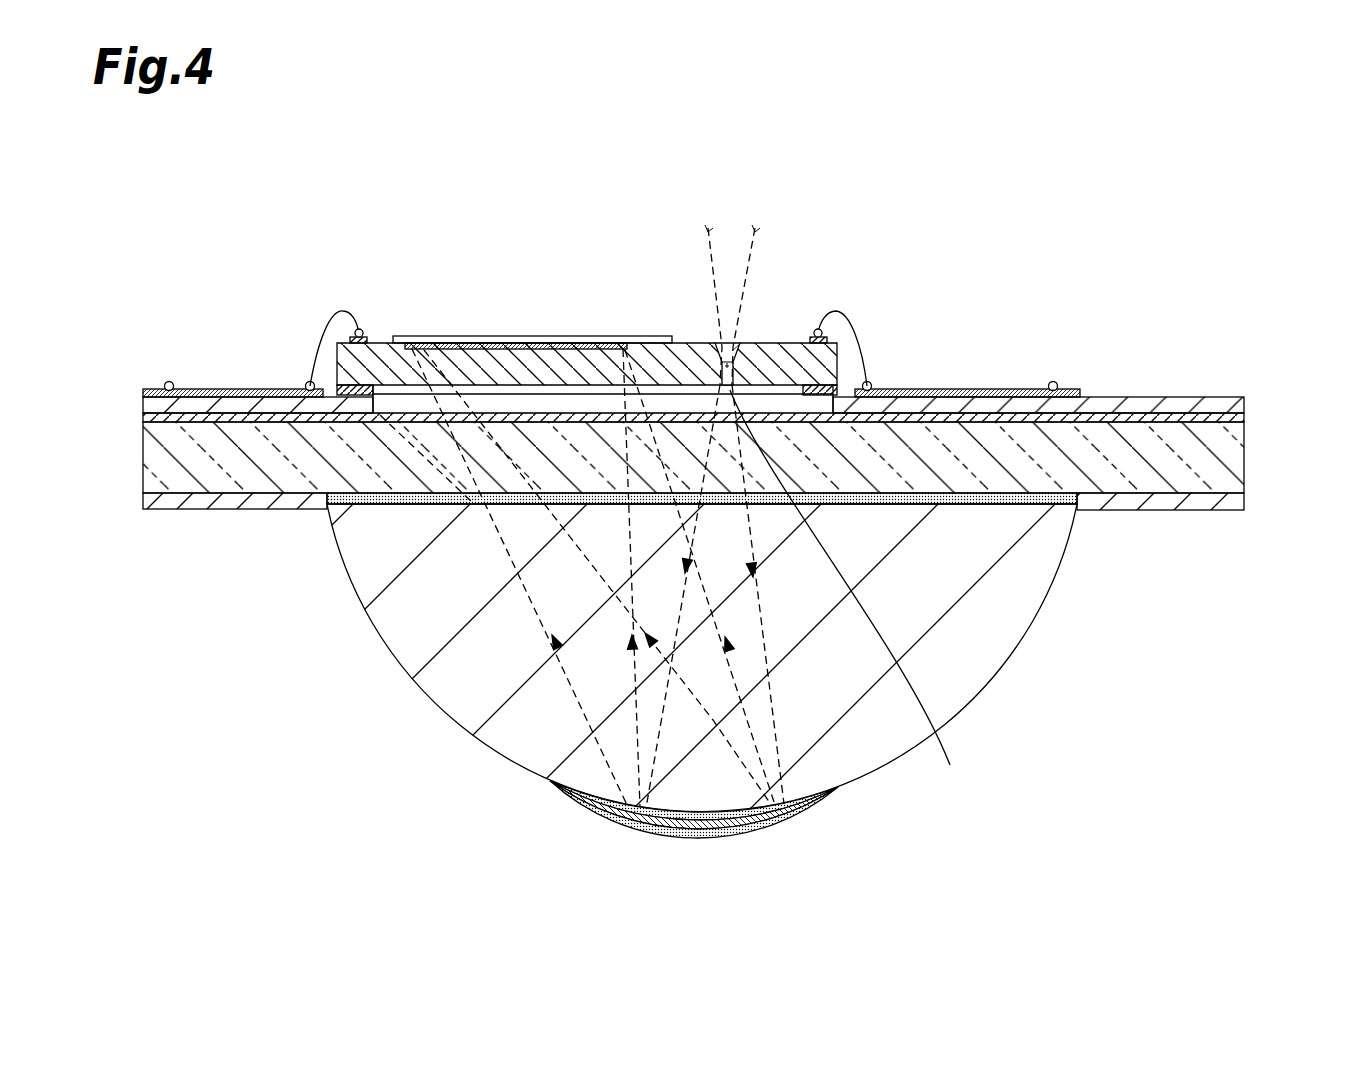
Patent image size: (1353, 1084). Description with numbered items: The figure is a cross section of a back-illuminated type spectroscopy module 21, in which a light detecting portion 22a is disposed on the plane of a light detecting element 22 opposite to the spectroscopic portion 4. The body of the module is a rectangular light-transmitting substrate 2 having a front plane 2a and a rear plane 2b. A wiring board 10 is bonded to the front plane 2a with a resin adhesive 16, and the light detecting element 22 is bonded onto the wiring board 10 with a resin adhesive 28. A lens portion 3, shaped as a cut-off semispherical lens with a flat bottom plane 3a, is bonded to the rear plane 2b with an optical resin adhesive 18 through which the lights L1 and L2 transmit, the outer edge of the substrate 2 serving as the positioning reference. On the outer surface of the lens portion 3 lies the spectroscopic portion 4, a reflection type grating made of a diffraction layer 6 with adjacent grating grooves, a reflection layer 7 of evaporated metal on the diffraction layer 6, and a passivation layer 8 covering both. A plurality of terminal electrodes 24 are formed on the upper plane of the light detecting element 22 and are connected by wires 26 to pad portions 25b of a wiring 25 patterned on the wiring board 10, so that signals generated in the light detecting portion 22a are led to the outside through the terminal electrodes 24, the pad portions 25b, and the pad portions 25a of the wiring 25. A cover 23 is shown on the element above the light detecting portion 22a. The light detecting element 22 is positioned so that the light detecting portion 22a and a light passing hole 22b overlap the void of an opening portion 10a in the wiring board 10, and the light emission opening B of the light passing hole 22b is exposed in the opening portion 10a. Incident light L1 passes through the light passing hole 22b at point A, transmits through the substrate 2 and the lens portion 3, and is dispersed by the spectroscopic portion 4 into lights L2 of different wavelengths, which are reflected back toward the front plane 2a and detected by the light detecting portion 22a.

The substrate 2 is at (1237, 457).
The front plane 2a is at (210, 418).
The rear plane 2b is at (1227, 500).
The lens portion 3 is at (1008, 642).
The bottom plane 3a is at (1057, 507).
The spectroscopic portion 4 is at (694, 868).
The diffraction layer 6 is at (578, 909).
The reflection layer 7 is at (673, 829).
The passivation layer 8 is at (593, 814).
The wiring board 10 is at (1240, 403).
The opening portion 10a is at (372, 405).
The resin adhesive 16 is at (1237, 420).
The optical resin adhesive 18 is at (370, 503).
The spectroscopy module 21 is at (242, 500).
The light detecting element 22 is at (610, 326).
The light detecting portion 22a is at (553, 342).
The light passing hole 22b is at (706, 329).
The cover plate 23 is at (494, 336).
The terminal electrodes 24 is at (360, 328).
The wiring 25 is at (248, 388).
The pad portions 25a is at (169, 381).
The pad portions 25b is at (310, 381).
The wires 26 is at (338, 312).
The resin adhesive 28 is at (362, 386).
The point A is at (737, 342).
The light emission opening B is at (846, 593).
The light L1 is at (756, 226).
The lights L2 is at (608, 732).